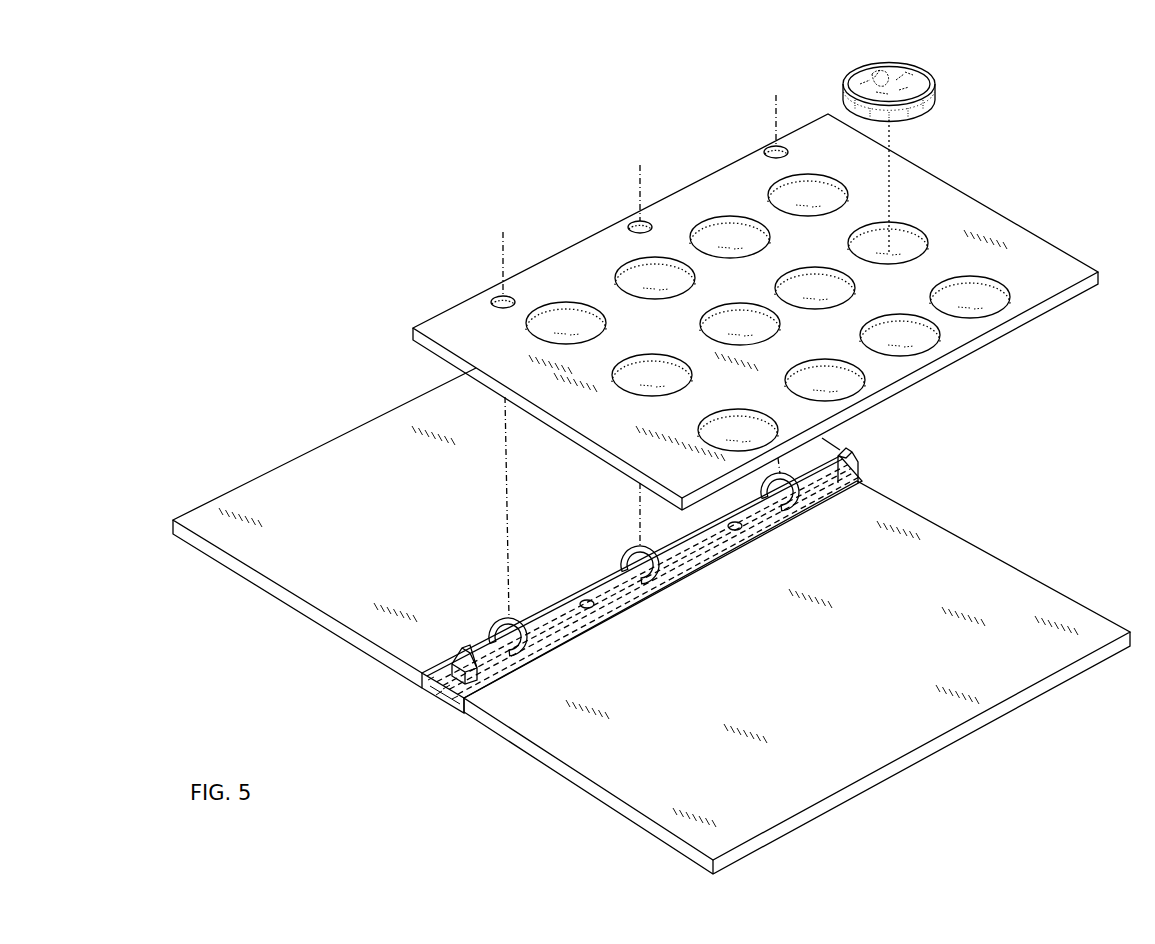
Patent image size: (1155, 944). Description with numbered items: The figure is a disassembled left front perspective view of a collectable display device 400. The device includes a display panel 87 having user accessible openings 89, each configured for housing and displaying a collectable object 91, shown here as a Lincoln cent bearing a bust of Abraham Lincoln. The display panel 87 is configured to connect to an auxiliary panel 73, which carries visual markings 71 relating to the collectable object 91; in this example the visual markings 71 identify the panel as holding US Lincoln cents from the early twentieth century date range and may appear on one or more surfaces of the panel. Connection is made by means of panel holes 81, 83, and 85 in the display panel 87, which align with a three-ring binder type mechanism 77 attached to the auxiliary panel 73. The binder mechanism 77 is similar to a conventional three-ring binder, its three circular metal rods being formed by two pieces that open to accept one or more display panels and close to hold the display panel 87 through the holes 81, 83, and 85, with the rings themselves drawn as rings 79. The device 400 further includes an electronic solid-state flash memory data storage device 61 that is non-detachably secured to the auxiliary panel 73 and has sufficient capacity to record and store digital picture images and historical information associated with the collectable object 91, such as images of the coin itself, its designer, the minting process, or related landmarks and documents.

The collectable display device 400 is at (458, 192).
The electronic solid-state flash memory data storage device 61 is at (437, 700).
The visual markings 71 is at (318, 488).
The auxiliary panel 73 is at (390, 420).
The three-ring binder type mechanism 77 is at (857, 462).
The binder ring 79 is at (533, 645).
The panel hole 81 is at (494, 292).
The panel hole 83 is at (637, 216).
The panel hole 85 is at (771, 141).
The display panel 87 is at (1053, 273).
The user accessible opening 89 is at (912, 253).
The collectable object 91 is at (920, 70).